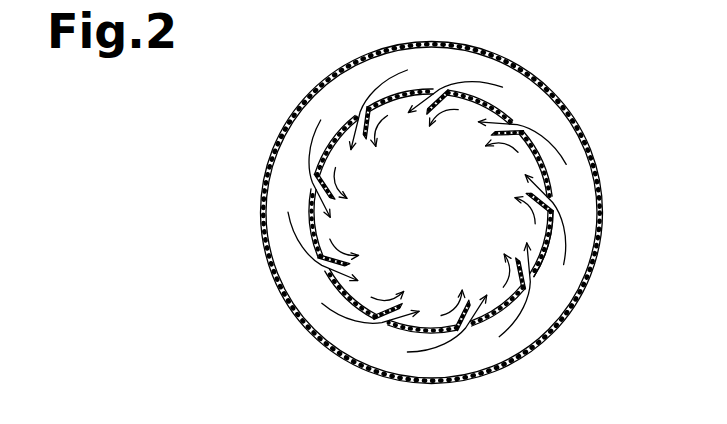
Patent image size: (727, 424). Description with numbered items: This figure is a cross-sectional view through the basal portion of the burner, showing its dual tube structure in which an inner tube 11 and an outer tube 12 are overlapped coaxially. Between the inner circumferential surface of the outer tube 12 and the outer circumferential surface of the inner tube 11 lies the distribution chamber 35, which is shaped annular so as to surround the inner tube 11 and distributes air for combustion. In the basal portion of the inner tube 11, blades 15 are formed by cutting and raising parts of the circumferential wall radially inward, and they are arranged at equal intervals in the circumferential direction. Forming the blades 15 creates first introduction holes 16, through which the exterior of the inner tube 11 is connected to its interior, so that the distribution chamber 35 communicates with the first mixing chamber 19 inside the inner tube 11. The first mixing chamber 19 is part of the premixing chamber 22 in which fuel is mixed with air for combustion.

The inner tube 11 is at (553, 183).
The outer tube 12 is at (556, 93).
The blades 15 is at (433, 210).
The first introduction holes 16 is at (423, 96).
The first mixing chamber 19 is at (448, 227).
The premixing chamber 22 is at (540, 231).
The distribution chamber 35 is at (573, 287).